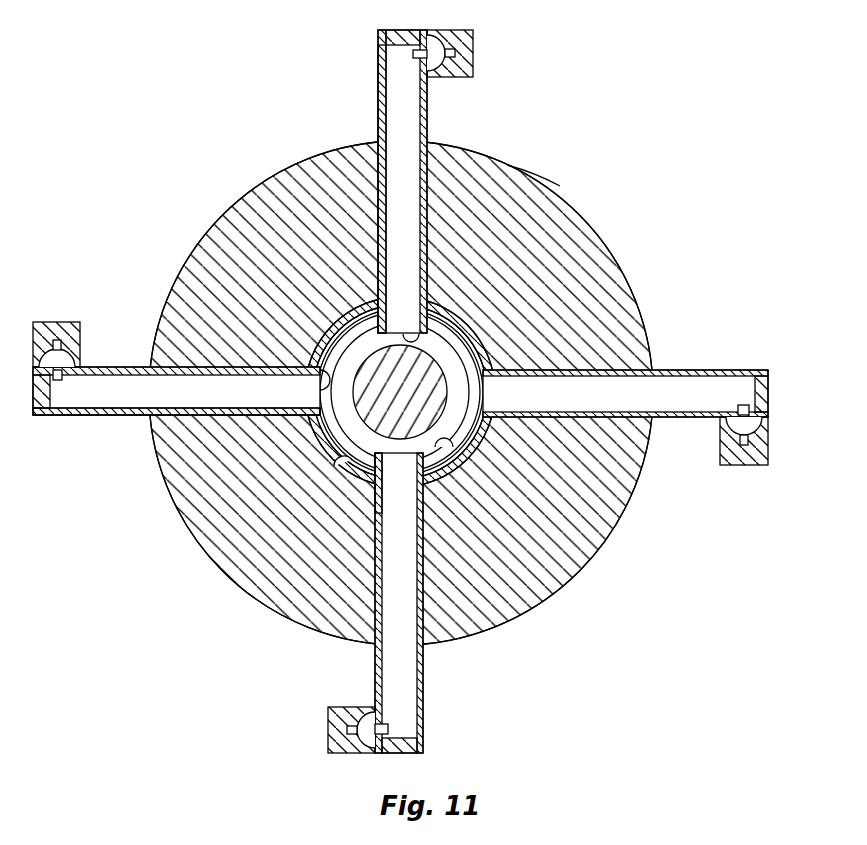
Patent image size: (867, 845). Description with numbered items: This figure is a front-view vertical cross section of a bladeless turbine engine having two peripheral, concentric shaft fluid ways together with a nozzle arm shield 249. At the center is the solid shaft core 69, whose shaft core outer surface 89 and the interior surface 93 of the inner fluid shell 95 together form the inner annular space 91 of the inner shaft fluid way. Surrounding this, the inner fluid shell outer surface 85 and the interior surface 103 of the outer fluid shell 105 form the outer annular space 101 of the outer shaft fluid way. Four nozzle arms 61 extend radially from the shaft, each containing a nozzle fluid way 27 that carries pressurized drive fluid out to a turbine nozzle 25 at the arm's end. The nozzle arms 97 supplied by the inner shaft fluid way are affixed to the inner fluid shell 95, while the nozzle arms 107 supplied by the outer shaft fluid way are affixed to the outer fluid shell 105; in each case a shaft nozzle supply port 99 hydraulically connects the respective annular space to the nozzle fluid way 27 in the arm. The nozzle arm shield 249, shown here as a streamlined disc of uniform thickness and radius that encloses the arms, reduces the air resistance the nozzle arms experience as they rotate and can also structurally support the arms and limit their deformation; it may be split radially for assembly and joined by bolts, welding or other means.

The turbine nozzle 25 is at (473, 31).
The nozzle fluid way 27 is at (395, 103).
The nozzle arm 61 is at (383, 133).
The shaft core 69 is at (228, 228).
The inner fluid shell outer surface 85 is at (335, 423).
The shaft core outer surface 89 is at (455, 373).
The inner annular space 91 is at (483, 352).
The interior surface of the inner fluid shell 93 is at (573, 572).
The inner fluid shell 95 is at (458, 432).
The nozzle arm 97 is at (310, 172).
The shaft nozzle supply port 99 is at (217, 258).
The outer annular space 101 is at (367, 462).
The interior surface of the outer fluid shell 103 is at (345, 462).
The outer fluid shell 105 is at (330, 447).
The nozzle arm 107 is at (123, 367).
The nozzle arm shield 249 is at (508, 162).